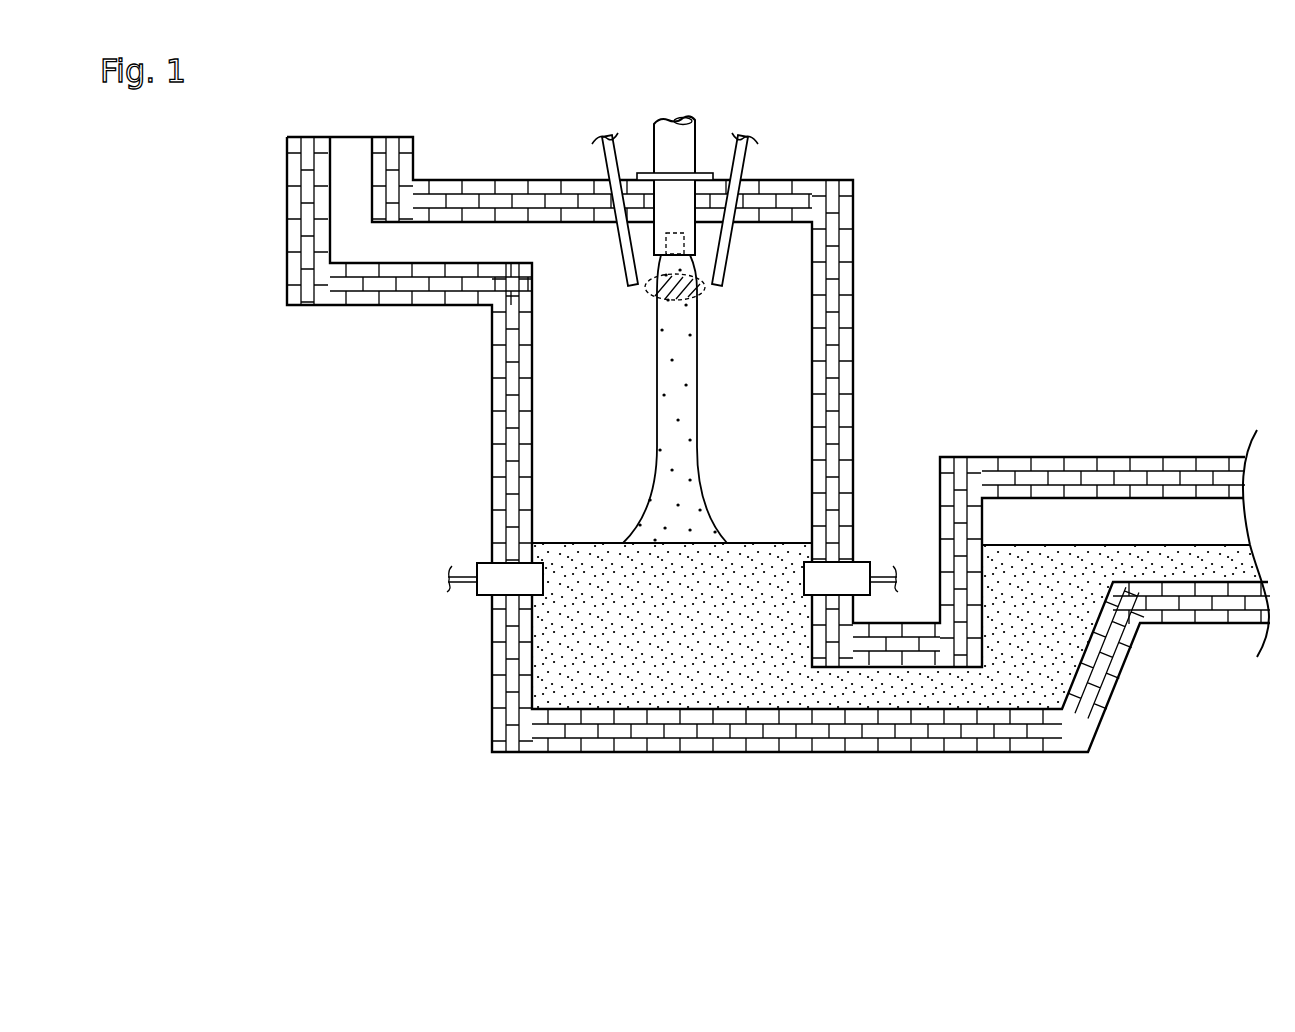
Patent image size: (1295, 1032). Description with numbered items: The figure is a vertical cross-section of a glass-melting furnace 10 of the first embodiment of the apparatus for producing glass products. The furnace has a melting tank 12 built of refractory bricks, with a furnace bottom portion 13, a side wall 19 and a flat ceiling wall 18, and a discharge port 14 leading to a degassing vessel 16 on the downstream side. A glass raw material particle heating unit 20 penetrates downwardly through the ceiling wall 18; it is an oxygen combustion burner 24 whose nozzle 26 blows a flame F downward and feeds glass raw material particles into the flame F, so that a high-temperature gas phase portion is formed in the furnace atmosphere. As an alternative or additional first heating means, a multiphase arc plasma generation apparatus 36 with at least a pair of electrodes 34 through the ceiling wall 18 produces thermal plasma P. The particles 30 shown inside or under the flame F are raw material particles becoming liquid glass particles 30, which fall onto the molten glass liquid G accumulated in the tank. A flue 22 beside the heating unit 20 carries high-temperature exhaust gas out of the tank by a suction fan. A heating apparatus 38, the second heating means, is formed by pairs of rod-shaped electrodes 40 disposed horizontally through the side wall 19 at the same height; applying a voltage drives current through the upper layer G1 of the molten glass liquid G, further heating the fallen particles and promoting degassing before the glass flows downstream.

The glass-melting furnace 10 is at (750, 429).
The melting tank 12 is at (863, 203).
The furnace bottom portion 13 is at (594, 742).
The discharge port 14 is at (919, 618).
The degassing vessel 16 is at (1177, 463).
The ceiling wall 18 is at (797, 180).
The side wall 19 is at (848, 238).
The glass raw material particle heating unit 20 is at (703, 108).
The flue 22 is at (347, 173).
The oxygen combustion burner 24 is at (663, 144).
The nozzle 26 is at (669, 242).
The liquid glass particles 30 is at (657, 318).
The electrode 34 is at (630, 274).
The multiphase arc plasma generation apparatus 36 is at (759, 131).
The heating apparatus 38 is at (869, 551).
The electrode 40 is at (488, 570).
The molten glass liquid G is at (1200, 568).
The upper layer of molten glass liquid G1 is at (757, 555).
The thermal plasma P is at (703, 290).
The flame F is at (700, 312).